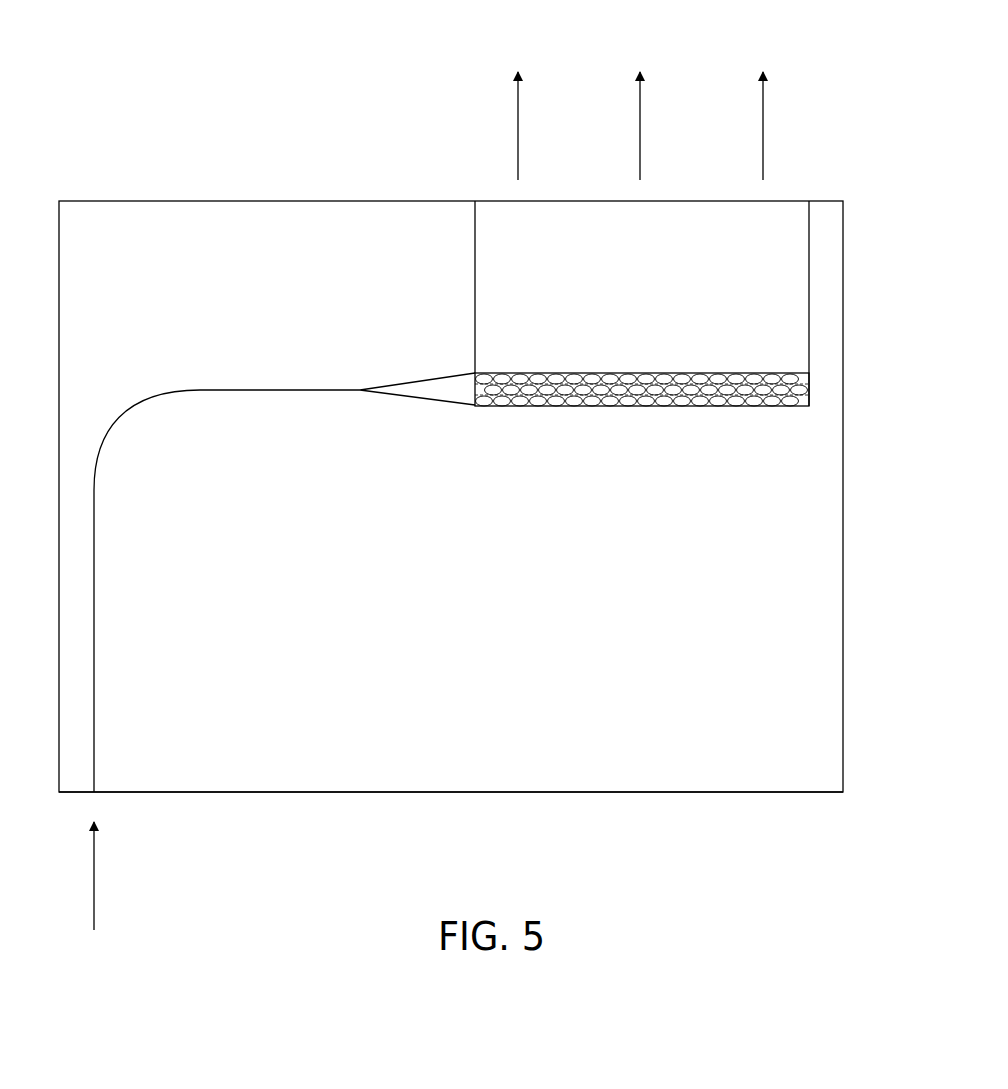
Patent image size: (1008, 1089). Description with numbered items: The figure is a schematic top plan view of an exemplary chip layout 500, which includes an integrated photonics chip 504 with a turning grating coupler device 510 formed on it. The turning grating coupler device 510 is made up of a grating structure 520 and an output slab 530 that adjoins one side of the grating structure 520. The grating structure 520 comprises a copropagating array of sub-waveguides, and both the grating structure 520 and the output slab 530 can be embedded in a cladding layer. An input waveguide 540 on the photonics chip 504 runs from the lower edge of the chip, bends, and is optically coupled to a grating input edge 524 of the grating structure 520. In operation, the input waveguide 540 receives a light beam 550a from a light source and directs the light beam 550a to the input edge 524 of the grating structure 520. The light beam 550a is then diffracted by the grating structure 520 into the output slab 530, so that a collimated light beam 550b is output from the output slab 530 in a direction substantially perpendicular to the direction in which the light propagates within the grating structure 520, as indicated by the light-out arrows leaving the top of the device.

The chip layout 500 is at (216, 86).
The integrated photonics chip 504 is at (750, 782).
The turning grating coupler device 510 is at (466, 306).
The grating structure 520 is at (643, 392).
The grating input edge 524 is at (475, 395).
The output slab 530 is at (500, 237).
The input waveguide 540 is at (95, 580).
The light beam 550a is at (95, 875).
The collimated light beam 550b is at (765, 128).